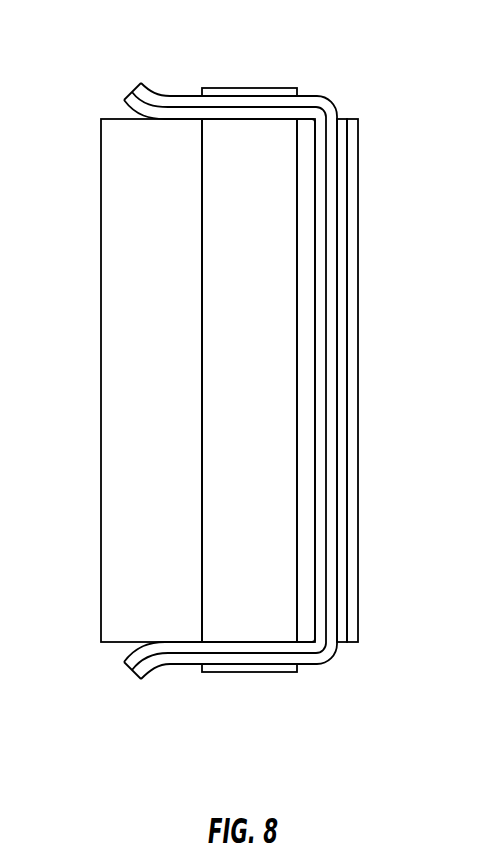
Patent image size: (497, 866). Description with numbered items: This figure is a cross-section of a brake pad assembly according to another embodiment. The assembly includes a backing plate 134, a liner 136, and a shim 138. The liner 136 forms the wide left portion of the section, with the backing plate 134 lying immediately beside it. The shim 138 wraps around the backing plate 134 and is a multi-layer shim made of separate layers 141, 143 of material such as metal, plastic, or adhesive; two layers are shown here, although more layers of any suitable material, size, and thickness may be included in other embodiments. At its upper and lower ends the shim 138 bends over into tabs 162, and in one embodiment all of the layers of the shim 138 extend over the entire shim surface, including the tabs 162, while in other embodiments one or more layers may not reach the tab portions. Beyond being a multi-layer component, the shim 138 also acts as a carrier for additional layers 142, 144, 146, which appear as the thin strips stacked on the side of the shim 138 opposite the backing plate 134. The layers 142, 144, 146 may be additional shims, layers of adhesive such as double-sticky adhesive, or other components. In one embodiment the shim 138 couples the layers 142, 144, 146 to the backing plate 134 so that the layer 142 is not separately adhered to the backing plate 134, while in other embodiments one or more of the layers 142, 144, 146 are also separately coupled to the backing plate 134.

The backing plate 134 is at (258, 615).
The liner 136 is at (127, 550).
The shim 138 is at (322, 95).
The layer 141 is at (331, 100).
The layer 142 is at (303, 189).
The layer 143 is at (328, 111).
The layer 144 is at (340, 348).
The layer 146 is at (350, 457).
The tab 162 is at (170, 95).